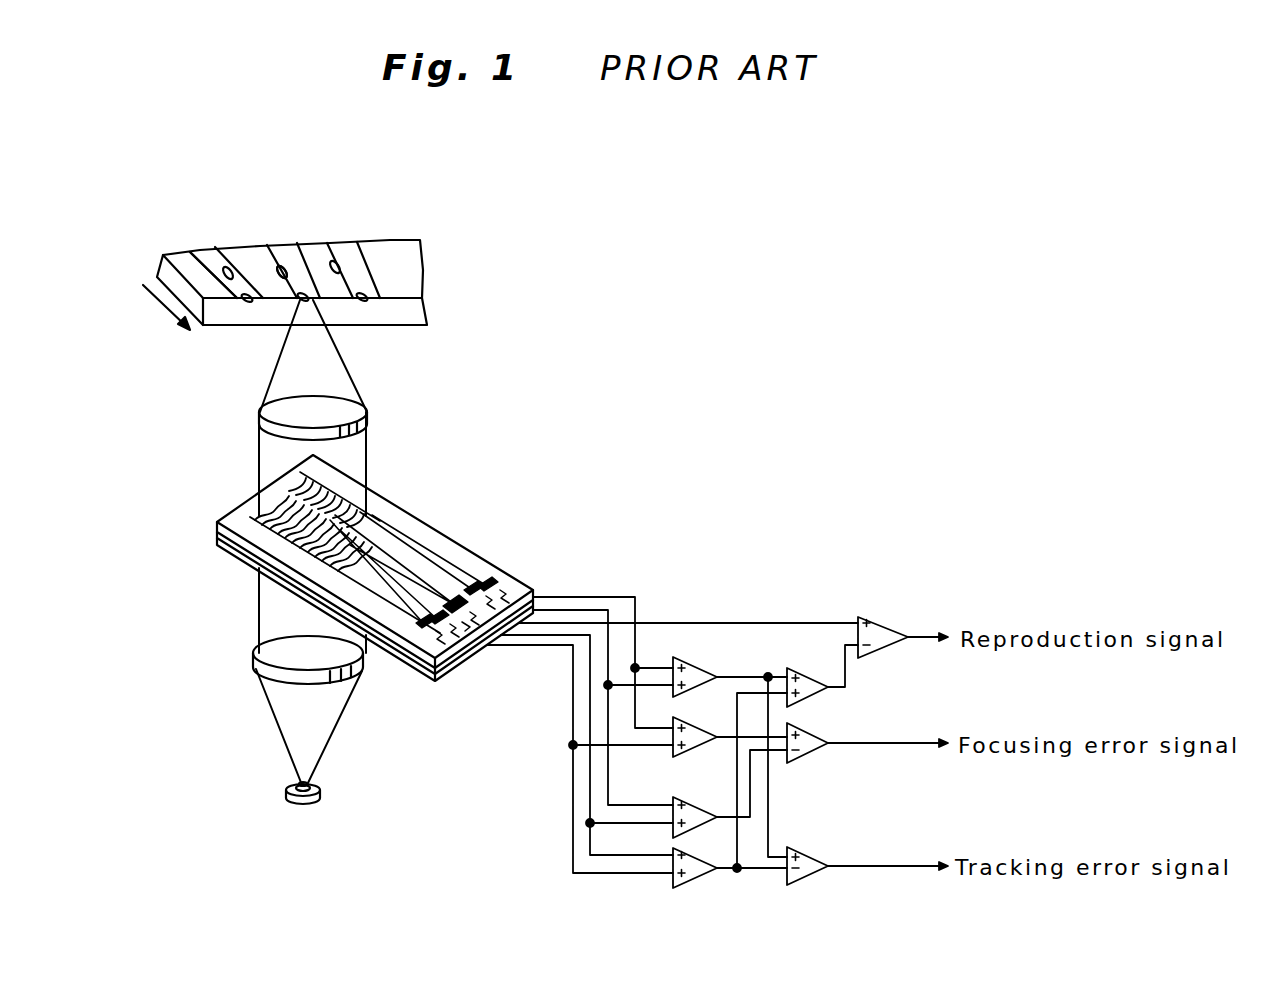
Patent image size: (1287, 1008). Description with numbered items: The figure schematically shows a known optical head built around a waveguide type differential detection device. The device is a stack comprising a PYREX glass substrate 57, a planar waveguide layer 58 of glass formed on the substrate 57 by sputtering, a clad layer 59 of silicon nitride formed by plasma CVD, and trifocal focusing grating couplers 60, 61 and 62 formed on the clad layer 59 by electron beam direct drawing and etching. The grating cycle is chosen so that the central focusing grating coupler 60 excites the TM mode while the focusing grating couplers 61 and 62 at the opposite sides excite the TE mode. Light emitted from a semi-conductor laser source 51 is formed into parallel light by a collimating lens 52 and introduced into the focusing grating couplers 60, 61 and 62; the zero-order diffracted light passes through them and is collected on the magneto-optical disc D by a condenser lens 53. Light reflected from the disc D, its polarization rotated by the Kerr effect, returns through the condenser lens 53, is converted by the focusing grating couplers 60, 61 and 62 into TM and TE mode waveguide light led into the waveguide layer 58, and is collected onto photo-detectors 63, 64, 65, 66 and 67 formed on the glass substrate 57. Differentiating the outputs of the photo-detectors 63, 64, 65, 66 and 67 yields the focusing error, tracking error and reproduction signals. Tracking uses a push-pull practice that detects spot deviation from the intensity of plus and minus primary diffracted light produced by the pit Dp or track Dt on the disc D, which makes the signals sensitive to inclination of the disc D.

The magneto-optical disc D is at (207, 327).
The track Dt is at (265, 258).
The pit Dp is at (280, 272).
The semi-conductor laser source 51 is at (320, 793).
The collimating lens 52 is at (365, 670).
The condenser lens 53 is at (367, 420).
The glass substrate 57 is at (217, 545).
The planar waveguide layer 58 is at (217, 532).
The clad layer 59 is at (217, 522).
The focusing grating coupler 60 is at (270, 495).
The focusing grating coupler 61 is at (258, 508).
The focusing grating coupler 62 is at (310, 475).
The photo-detector 63 is at (455, 610).
The photo-detector 64 is at (425, 628).
The photo-detector 65 is at (438, 623).
The photo-detector 66 is at (473, 587).
The photo-detector 67 is at (488, 587).